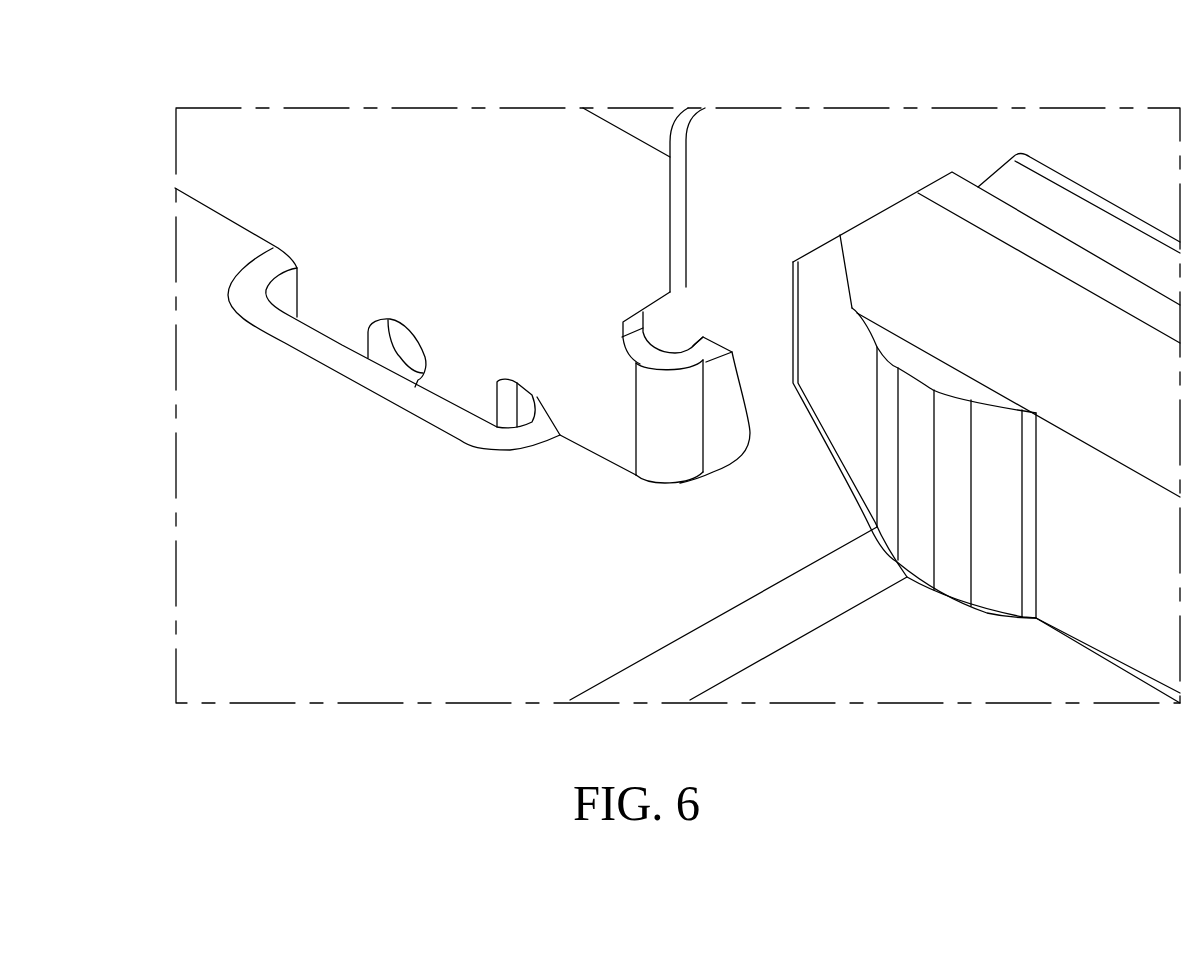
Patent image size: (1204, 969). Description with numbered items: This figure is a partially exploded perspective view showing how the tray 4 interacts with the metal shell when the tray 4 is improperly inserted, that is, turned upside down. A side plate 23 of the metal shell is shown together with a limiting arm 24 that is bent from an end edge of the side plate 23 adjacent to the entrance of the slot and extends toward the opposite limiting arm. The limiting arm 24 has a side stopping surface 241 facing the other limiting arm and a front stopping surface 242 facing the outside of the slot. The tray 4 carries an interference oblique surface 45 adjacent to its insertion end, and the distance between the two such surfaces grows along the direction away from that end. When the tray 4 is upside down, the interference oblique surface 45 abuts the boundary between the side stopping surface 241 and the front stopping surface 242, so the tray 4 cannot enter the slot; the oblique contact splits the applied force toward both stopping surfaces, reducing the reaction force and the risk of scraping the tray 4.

The tray 4 is at (875, 380).
The side plate 23 is at (352, 268).
The limiting arm 24 is at (683, 318).
The side stopping surface 241 is at (737, 377).
The front stopping surface 242 is at (725, 437).
The interference oblique surface 45 is at (835, 403).